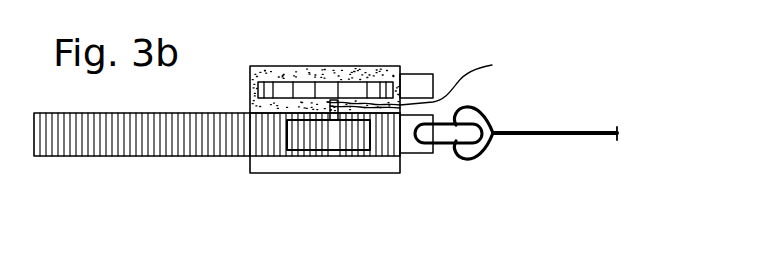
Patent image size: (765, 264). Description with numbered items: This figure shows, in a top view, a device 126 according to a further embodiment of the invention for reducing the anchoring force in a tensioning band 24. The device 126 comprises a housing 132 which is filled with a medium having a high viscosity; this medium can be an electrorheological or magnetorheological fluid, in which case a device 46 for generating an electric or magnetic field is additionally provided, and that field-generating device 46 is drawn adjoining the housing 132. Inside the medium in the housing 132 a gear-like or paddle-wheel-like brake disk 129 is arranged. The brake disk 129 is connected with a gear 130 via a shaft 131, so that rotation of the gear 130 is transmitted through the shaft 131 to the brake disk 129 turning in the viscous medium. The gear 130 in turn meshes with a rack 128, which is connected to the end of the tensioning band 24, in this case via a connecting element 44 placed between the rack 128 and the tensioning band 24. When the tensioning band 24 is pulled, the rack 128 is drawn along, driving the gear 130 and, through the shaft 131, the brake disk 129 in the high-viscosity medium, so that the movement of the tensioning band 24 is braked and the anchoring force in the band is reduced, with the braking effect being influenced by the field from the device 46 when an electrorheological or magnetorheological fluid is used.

The tensioning band 24 is at (570, 135).
The connecting element 44 is at (450, 138).
The device for generating an electric or magnetic field 46 is at (418, 85).
The device 126 is at (278, 178).
The rack 128 is at (137, 140).
The brake disk 129 is at (350, 91).
The gear 130 is at (333, 122).
The shaft 131 is at (431, 80).
The housing 132 is at (300, 66).